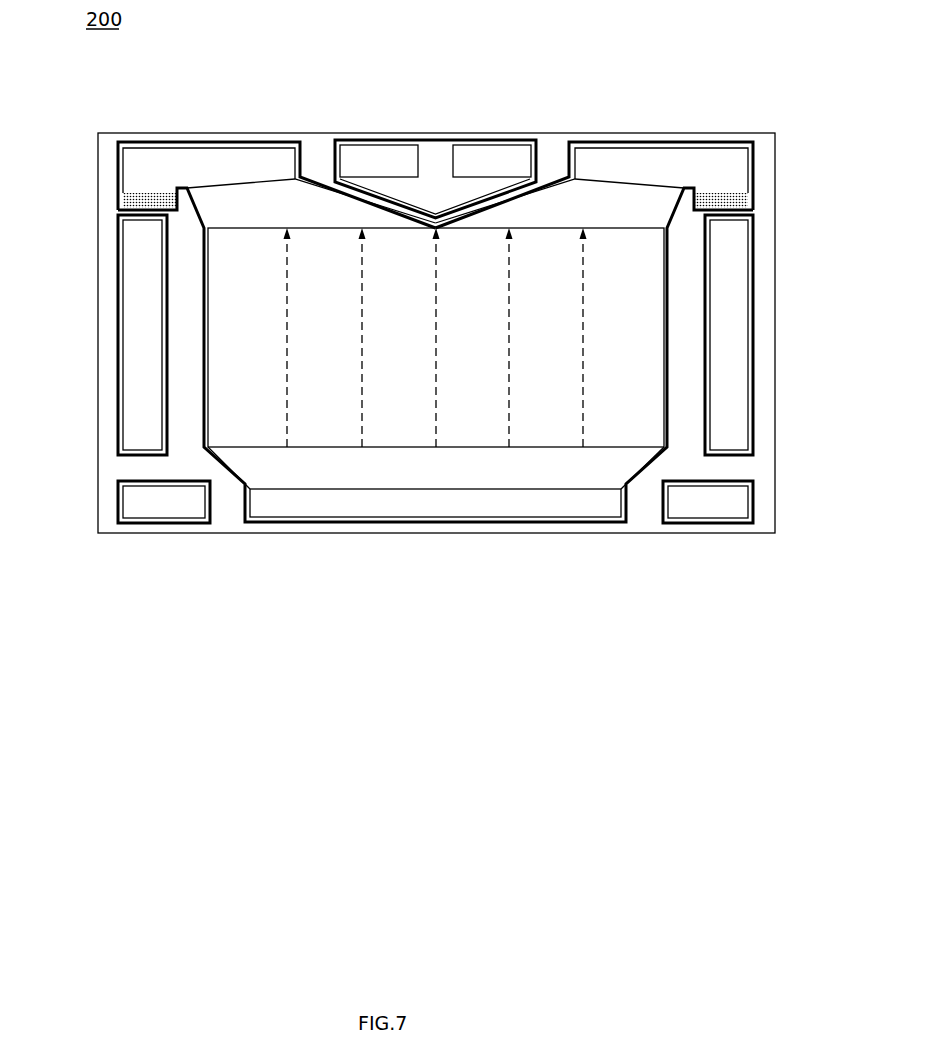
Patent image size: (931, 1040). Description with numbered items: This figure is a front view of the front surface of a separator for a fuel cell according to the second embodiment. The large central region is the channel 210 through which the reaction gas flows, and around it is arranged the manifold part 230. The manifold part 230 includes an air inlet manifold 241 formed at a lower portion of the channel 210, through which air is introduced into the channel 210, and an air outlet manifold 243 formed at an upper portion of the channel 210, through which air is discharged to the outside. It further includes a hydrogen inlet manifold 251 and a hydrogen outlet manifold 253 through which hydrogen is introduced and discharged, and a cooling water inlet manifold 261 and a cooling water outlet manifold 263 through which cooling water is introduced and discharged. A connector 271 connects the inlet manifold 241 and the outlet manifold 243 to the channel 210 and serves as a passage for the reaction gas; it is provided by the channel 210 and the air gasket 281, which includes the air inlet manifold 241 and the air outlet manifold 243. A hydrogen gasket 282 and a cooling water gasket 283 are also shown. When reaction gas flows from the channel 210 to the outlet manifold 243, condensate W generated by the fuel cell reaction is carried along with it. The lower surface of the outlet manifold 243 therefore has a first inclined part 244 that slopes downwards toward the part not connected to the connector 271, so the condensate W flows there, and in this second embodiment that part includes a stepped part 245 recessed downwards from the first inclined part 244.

The channel 210 is at (540, 281).
The manifold part 230 is at (419, 582).
The air inlet manifold 241 is at (418, 507).
The air outlet manifold 243 is at (207, 167).
The first inclined part 244 is at (265, 180).
The stepped part 245 is at (737, 205).
The hydrogen inlet manifold 251 is at (375, 163).
The hydrogen outlet manifold 253 is at (145, 505).
The cooling water inlet manifold 261 is at (732, 378).
The cooling water outlet manifold 263 is at (140, 380).
The connector 271 is at (320, 215).
The air gasket 281 is at (160, 141).
The hydrogen gasket 282 is at (434, 140).
The cooling water gasket 283 is at (115, 328).
The condensate W is at (140, 201).